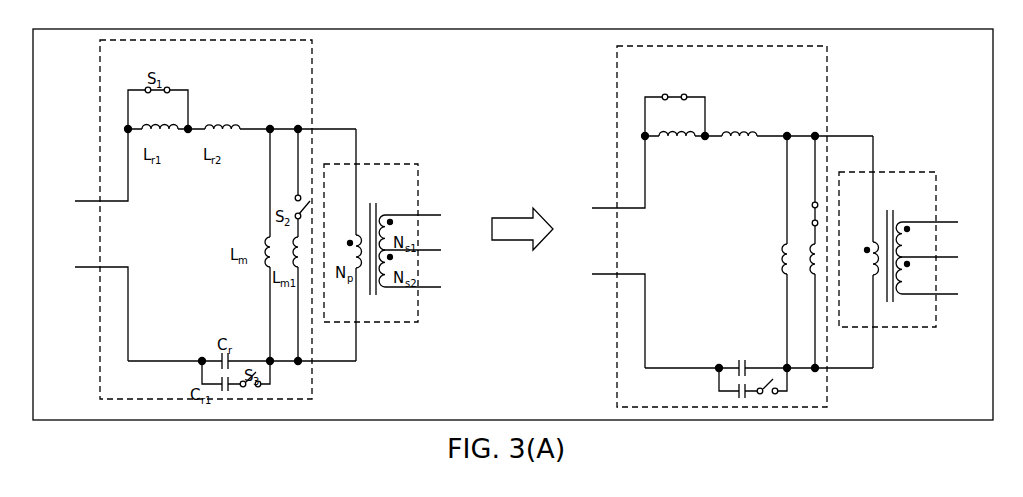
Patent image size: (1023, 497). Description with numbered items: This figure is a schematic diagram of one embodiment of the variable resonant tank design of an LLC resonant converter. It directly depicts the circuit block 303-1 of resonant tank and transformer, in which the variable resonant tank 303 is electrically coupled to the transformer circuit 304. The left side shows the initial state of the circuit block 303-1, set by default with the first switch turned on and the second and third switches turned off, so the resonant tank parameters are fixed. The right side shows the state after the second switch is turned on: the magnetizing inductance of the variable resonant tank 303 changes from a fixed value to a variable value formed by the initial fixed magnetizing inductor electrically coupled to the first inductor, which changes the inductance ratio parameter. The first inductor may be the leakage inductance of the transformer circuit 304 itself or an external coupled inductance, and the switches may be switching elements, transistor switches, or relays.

The variable resonant tank 303 is at (313, 76).
The circuit block of resonant tank and transformer 303-1 is at (542, 75).
The transformer circuit 304 is at (378, 162).